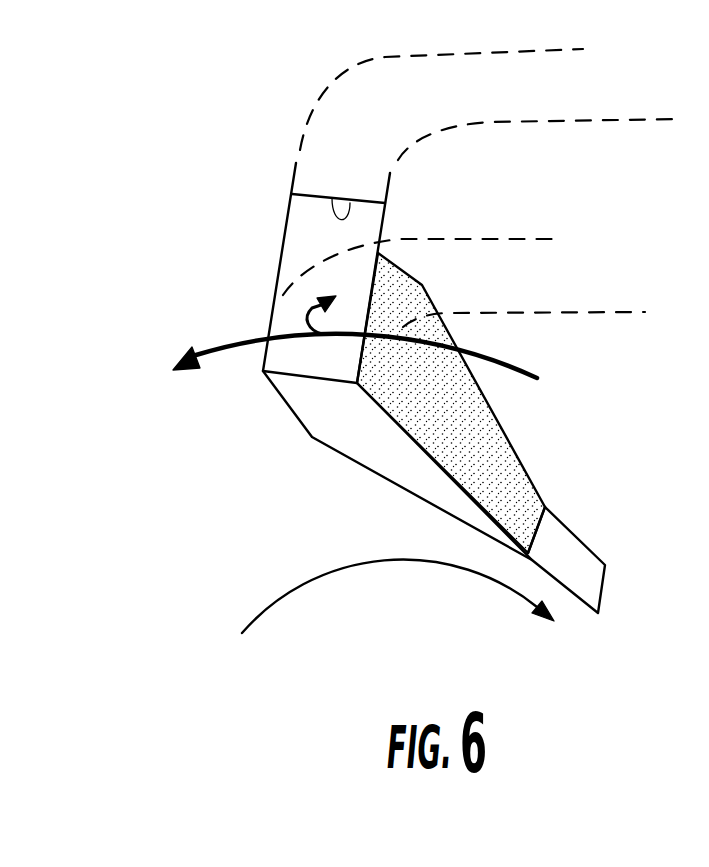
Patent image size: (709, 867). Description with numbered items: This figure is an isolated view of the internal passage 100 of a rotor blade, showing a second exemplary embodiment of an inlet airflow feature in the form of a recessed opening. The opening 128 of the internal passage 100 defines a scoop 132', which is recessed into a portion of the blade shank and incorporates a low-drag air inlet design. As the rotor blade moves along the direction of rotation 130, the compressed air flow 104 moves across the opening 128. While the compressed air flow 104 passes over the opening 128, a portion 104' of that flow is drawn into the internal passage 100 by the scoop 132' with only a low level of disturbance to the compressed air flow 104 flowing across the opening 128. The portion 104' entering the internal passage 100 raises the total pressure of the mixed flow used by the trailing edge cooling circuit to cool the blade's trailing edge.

The internal passage 100 is at (430, 232).
The scoop 132' is at (379, 345).
The opening 128 is at (353, 203).
The compressed air flow 104 is at (395, 385).
The portion of compressed air flow 104' is at (263, 301).
The direction of rotation 130 is at (294, 589).